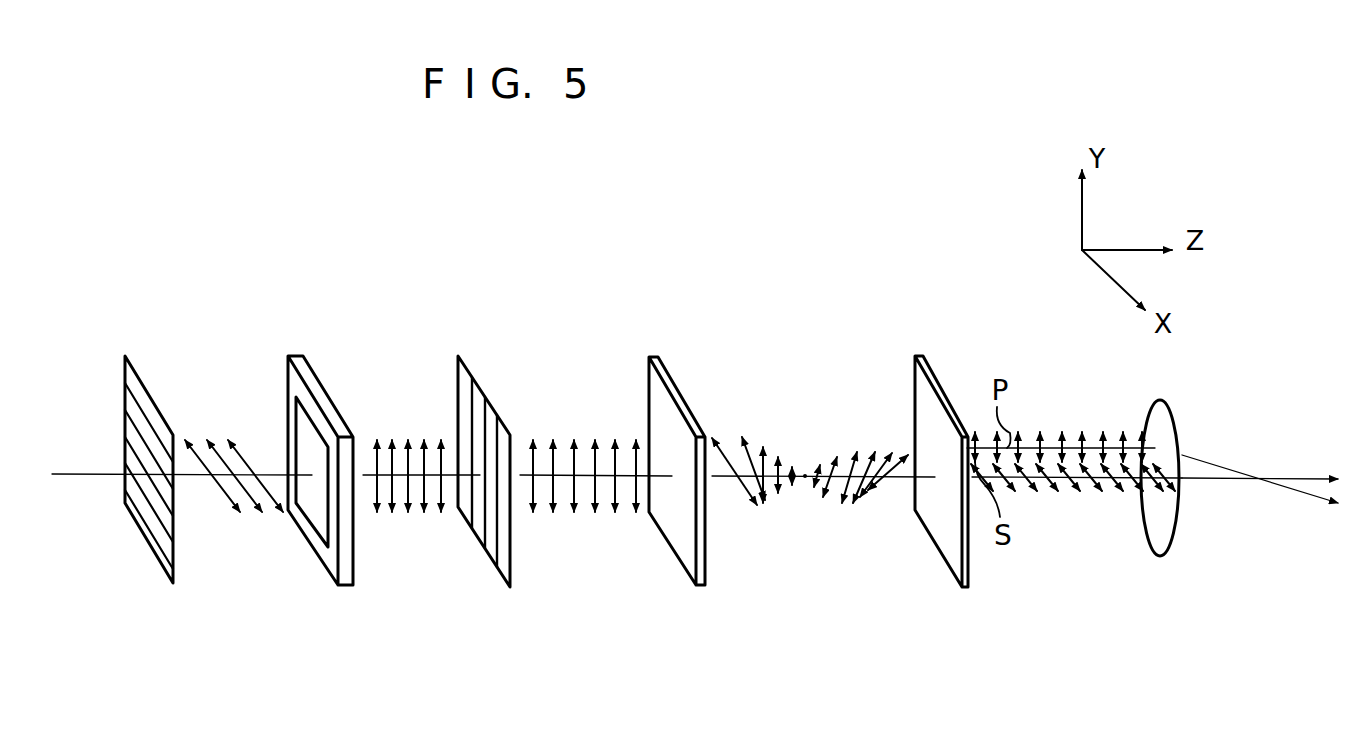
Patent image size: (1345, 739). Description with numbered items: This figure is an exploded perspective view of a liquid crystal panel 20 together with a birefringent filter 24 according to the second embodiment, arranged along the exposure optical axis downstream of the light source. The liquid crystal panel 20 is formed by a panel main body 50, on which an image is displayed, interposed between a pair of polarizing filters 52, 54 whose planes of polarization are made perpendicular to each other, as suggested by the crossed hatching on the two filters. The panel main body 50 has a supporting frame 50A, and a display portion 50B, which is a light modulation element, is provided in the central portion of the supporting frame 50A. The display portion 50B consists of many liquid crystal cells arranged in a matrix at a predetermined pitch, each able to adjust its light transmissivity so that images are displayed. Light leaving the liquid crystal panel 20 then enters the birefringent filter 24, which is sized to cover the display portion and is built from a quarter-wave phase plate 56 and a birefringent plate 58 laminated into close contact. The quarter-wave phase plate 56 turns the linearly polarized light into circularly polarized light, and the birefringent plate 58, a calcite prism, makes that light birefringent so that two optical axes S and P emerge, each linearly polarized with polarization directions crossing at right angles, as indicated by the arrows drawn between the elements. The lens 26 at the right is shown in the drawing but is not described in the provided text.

The liquid crystal panel 20 is at (523, 668).
The birefringent filter 24 is at (992, 665).
The lens 26 is at (1160, 556).
The panel main body 50 is at (274, 474).
The supporting frame 50A is at (292, 377).
The display portion 50B is at (307, 442).
The polarizing filter 52 is at (163, 562).
The polarizing filter 54 is at (497, 570).
The quarter-wave phase plate 56 is at (687, 562).
The birefringent plate 58 is at (943, 557).